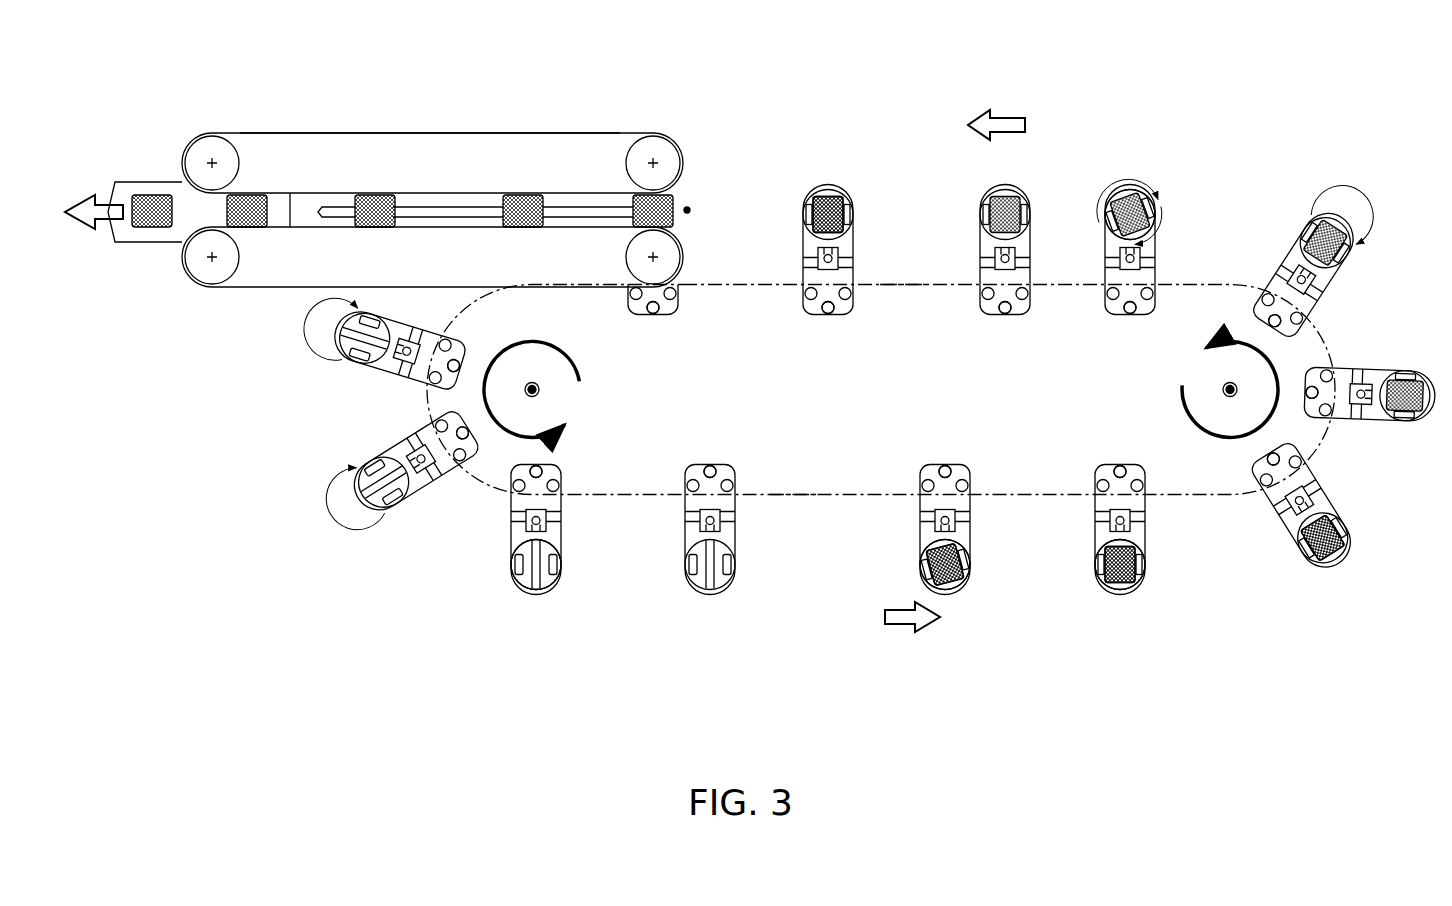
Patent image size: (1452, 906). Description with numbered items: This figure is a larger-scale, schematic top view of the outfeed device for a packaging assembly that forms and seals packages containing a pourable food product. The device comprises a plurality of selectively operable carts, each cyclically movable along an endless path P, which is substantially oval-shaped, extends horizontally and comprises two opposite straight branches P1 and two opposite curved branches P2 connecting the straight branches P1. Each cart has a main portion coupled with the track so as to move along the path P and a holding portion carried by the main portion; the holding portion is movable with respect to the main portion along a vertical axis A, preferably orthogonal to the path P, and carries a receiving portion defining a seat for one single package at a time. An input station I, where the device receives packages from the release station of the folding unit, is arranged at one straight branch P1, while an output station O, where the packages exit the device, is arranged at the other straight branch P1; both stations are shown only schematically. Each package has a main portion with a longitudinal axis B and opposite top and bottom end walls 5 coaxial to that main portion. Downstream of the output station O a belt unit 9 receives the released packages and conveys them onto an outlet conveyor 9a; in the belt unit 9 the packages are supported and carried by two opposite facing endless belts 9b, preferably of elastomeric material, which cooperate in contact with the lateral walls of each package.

The end wall 5 is at (1122, 592).
The belt unit 9 is at (533, 128).
The outlet conveyor 9a is at (130, 178).
The endless belts 9b is at (440, 130).
The output station O is at (688, 204).
The endless path P is at (478, 490).
The straight branch P1 is at (905, 280).
The curved branch P2 is at (1340, 357).
The vertical axis A is at (565, 555).
The longitudinal axis B is at (1160, 215).
The input station I is at (920, 540).